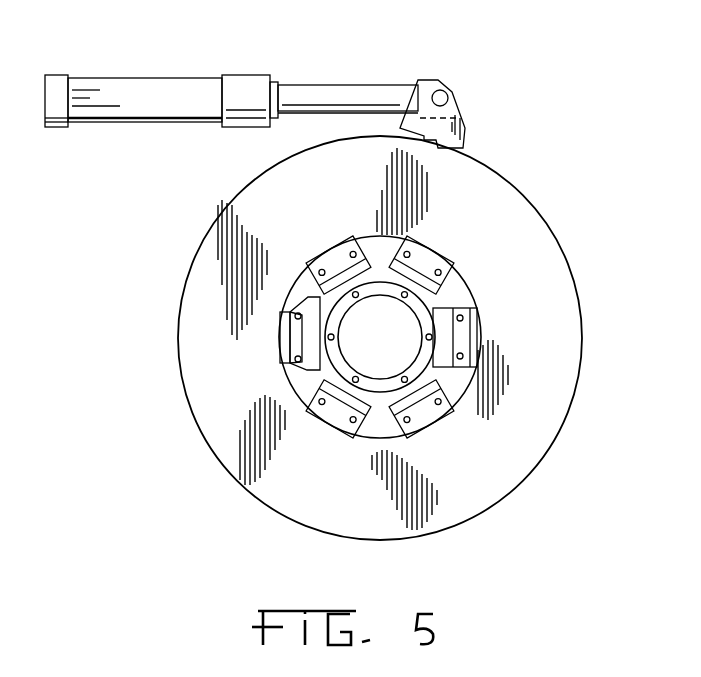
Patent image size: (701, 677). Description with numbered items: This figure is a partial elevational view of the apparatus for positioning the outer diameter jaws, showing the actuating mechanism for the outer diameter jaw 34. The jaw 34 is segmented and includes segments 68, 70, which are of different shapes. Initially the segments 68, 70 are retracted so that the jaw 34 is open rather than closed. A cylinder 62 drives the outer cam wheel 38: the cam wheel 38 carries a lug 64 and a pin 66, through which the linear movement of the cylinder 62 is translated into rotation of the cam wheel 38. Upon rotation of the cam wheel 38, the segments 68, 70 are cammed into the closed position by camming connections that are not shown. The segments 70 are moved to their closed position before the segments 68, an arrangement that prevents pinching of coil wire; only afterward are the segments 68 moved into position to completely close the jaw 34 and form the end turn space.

The outer diameter jaw 34 is at (433, 240).
The outer cam wheel 38 is at (533, 288).
The cylinder 62 is at (158, 92).
The lug 64 is at (448, 85).
The pin 66 is at (448, 98).
The segment 68 is at (462, 343).
The segment 70 is at (413, 397).